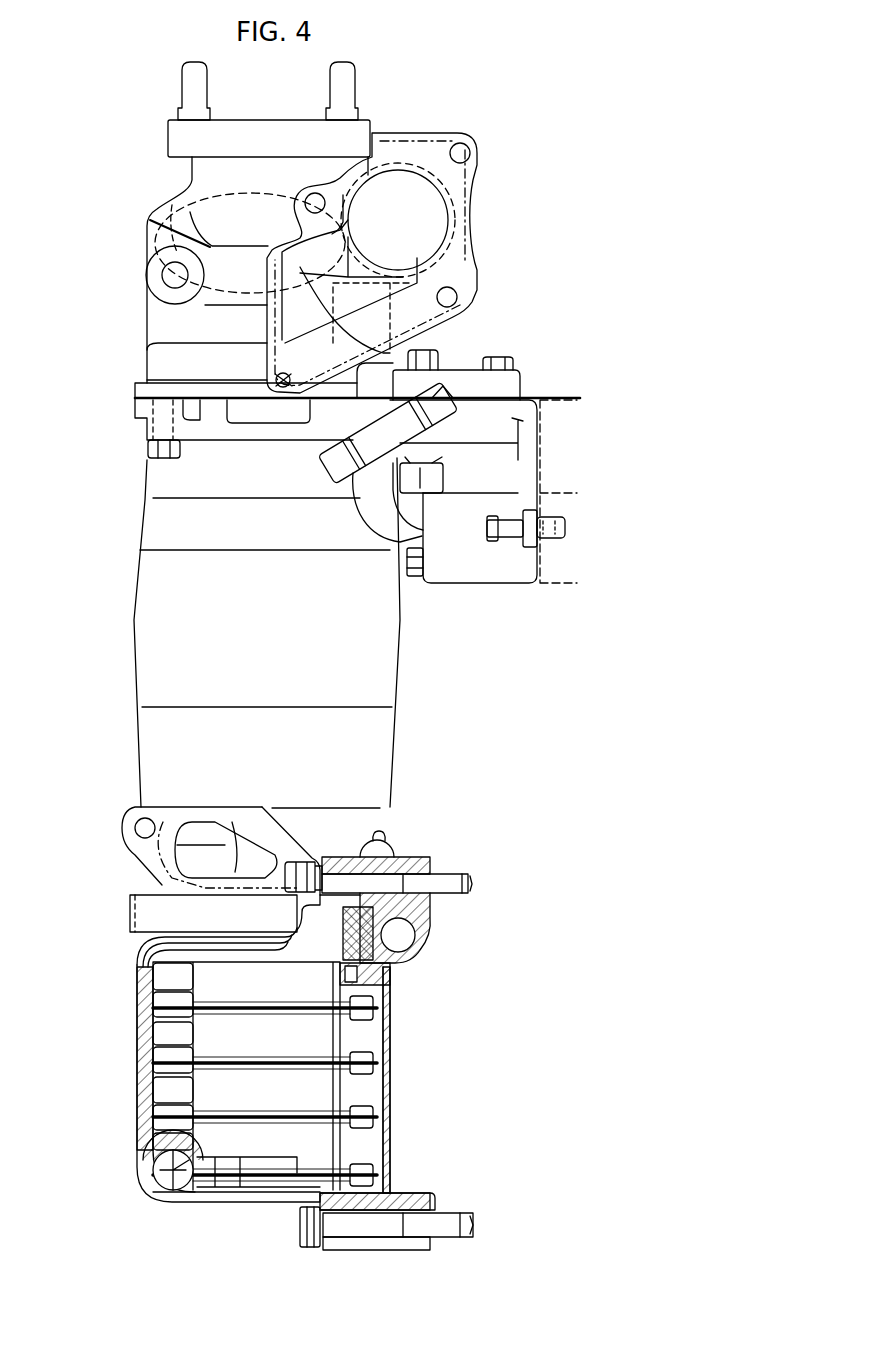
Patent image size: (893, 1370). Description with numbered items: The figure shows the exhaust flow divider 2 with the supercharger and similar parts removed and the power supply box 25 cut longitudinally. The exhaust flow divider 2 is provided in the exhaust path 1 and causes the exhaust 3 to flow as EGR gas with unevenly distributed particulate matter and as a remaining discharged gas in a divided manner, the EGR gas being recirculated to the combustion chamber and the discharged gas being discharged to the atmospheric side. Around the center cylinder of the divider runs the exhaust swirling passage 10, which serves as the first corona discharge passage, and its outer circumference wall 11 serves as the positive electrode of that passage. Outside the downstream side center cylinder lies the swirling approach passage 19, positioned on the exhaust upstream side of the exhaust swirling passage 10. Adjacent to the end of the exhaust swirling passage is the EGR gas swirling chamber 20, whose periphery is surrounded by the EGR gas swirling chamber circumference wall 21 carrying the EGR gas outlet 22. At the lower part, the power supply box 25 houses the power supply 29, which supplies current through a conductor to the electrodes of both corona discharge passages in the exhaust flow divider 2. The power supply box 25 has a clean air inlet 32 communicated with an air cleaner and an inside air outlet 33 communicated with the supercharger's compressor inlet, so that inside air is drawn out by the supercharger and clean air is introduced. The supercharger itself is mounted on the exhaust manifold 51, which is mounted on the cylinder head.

The exhaust path 1 is at (152, 133).
The exhaust flow divider 2 is at (136, 302).
The exhaust 3 is at (180, 240).
The swirling approach passage 19 is at (172, 213).
The exhaust swirling passage 10 is at (160, 578).
The outer circumference wall 11 is at (165, 626).
The exhaust manifold 51 is at (484, 570).
The EGR gas swirling chamber 20 is at (348, 828).
The EGR gas swirling chamber circumference wall 21 is at (363, 834).
The EGR gas outlet 22 is at (190, 863).
The inside air outlet 33 is at (400, 934).
The power supply box 25 is at (263, 1196).
The power supply 29 is at (244, 1103).
The clean air inlet 32 is at (167, 1172).